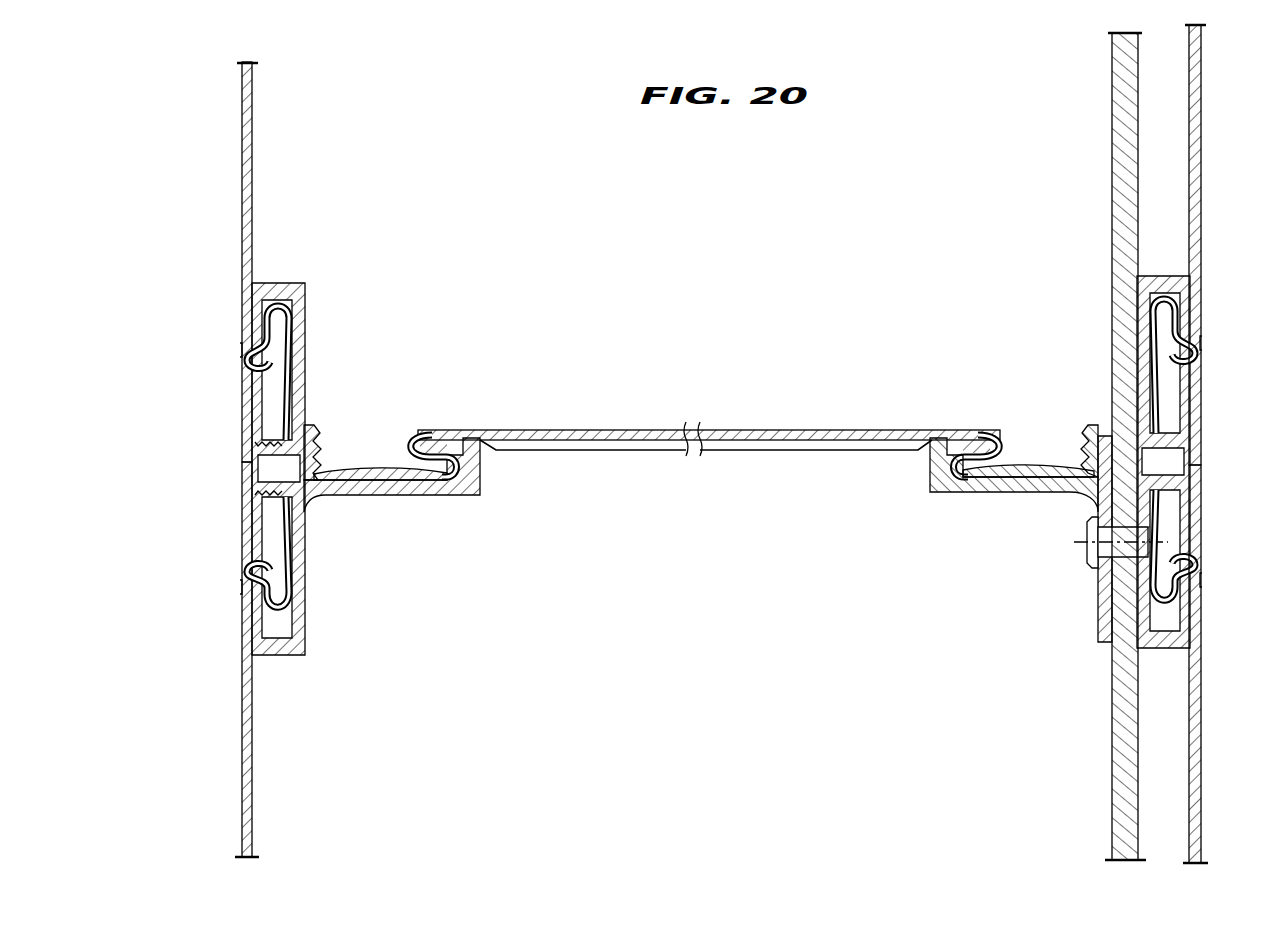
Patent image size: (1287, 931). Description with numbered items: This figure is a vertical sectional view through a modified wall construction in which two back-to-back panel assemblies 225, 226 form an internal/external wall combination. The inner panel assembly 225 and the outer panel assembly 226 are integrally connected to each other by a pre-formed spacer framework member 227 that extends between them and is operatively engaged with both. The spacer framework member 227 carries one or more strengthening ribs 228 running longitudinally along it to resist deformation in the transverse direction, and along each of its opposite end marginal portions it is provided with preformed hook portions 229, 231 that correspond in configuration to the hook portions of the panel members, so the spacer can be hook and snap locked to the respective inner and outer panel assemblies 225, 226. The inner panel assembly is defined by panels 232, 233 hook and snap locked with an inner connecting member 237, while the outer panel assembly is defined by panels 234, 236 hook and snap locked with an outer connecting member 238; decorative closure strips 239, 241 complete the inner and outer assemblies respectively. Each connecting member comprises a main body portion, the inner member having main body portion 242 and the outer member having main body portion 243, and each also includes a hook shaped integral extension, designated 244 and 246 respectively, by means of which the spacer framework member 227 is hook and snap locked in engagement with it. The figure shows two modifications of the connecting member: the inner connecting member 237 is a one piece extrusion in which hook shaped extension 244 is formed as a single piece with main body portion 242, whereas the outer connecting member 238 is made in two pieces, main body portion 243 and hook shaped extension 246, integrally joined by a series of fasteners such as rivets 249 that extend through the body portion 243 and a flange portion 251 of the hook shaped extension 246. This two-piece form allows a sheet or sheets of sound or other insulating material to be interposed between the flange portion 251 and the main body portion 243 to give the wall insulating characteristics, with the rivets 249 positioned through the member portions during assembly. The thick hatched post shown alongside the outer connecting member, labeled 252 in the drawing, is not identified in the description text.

The inner panel assembly 225 is at (228, 471).
The outer panel assembly 226 is at (1218, 414).
The spacer framework member 227 is at (560, 430).
The strengthening rib 228 is at (640, 445).
The hook portion 229 is at (386, 444).
The hook portion 231 is at (1048, 468).
The panel 232 is at (243, 190).
The panel 233 is at (243, 735).
The panel 234 is at (1200, 220).
The panel 236 is at (1200, 718).
The inner connecting member 237 is at (302, 283).
The outer connecting member 238 is at (1130, 348).
The decorative closure strip 239 is at (250, 398).
The decorative closure strip 241 is at (1200, 520).
The main body portion 242 is at (298, 378).
The main body portion 243 is at (1140, 315).
The hook shaped extension 244 is at (392, 492).
The hook shaped extension 246 is at (1025, 492).
The rivet 249 is at (1082, 555).
The flange portion 251 is at (1104, 606).
The post 252 is at (1112, 748).